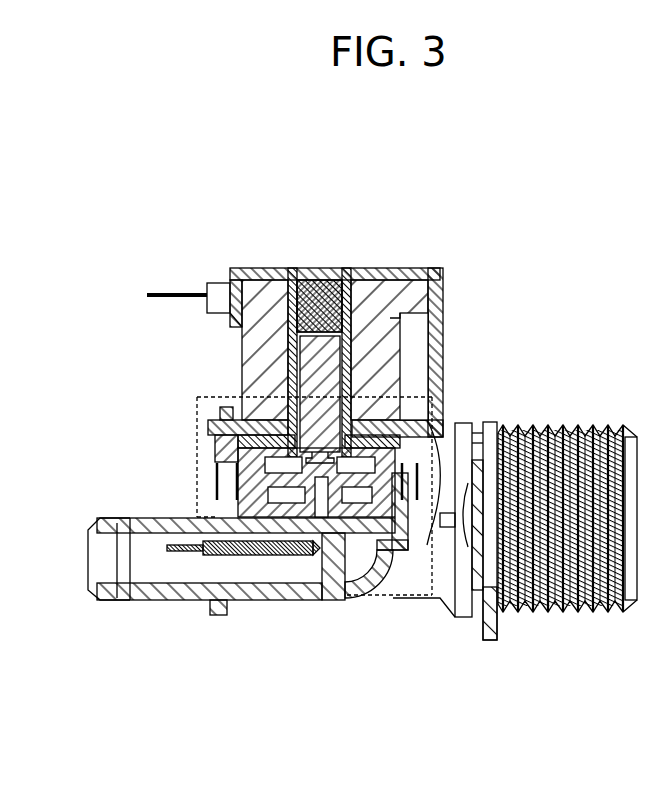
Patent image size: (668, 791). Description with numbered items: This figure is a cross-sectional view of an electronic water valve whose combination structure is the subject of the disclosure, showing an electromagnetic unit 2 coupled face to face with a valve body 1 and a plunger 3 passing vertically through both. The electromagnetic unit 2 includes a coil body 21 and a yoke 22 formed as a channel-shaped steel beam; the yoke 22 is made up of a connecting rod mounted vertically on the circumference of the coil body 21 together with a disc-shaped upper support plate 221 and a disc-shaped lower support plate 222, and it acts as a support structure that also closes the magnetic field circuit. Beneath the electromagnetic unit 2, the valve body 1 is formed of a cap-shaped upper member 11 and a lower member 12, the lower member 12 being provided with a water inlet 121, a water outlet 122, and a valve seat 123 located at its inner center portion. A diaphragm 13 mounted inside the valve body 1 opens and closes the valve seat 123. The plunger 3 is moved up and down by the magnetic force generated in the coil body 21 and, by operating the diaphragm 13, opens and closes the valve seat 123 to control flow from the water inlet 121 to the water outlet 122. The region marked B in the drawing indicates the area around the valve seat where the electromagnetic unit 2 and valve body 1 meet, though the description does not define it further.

The valve body 1 is at (362, 605).
The upper member 11 is at (443, 463).
The lower member 12 is at (393, 560).
The water inlet 121 is at (577, 560).
The water outlet 122 is at (147, 570).
The valve seat 123 is at (330, 570).
The diaphragm 13 is at (262, 545).
The electromagnetic unit 2 is at (358, 313).
The coil body 21 is at (425, 276).
The yoke 22 is at (447, 320).
The upper support plate 221 is at (384, 345).
The lower support plate 222 is at (378, 413).
The plunger 3 is at (310, 360).
The valve seat region B is at (195, 457).